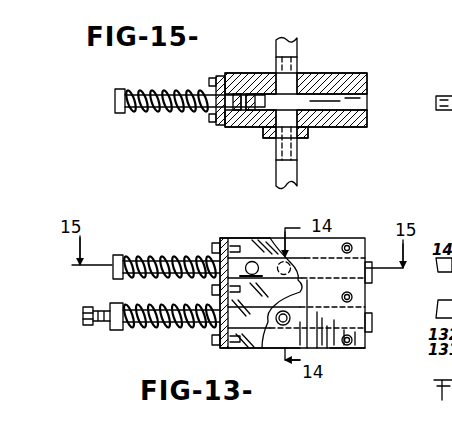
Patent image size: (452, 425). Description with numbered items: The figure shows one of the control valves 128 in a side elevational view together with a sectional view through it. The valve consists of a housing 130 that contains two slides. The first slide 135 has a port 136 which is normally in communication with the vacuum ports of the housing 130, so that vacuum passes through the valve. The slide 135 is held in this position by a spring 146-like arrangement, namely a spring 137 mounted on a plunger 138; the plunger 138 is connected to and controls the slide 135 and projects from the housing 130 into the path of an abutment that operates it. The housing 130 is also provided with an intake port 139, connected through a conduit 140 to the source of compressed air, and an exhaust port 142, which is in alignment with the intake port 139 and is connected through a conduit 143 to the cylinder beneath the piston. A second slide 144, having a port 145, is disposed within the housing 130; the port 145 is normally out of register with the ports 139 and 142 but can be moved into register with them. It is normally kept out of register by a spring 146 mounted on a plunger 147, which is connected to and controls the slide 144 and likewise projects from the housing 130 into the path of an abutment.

In FIG. 13, the control valve 128 is at (367, 293).
In FIG. 15, the housing 130 is at (368, 79).
In FIG. 13, the housing 130 is at (248, 240).
In FIG. 13, the slide 135 is at (361, 349).
In FIG. 13, the port 136 is at (272, 348).
In FIG. 13, the spring 137 is at (150, 330).
In FIG. 13, the plunger 138 is at (128, 330).
In FIG. 15, the intake port 139 is at (292, 80).
In FIG. 13, the intake port 139 is at (286, 262).
In FIG. 15, the conduit 140 is at (297, 50).
In FIG. 15, the exhaust port 142 is at (271, 131).
In FIG. 15, the conduit 143 is at (293, 168).
In FIG. 15, the slide 144 is at (356, 108).
In FIG. 13, the slide 144 is at (331, 260).
In FIG. 15, the port 145 is at (255, 96).
In FIG. 13, the port 145 is at (256, 262).
In FIG. 15, the spring 146 is at (212, 96).
In FIG. 13, the spring 146 is at (170, 260).
In FIG. 15, the plunger 147 is at (143, 112).
In FIG. 13, the plunger 147 is at (153, 232).